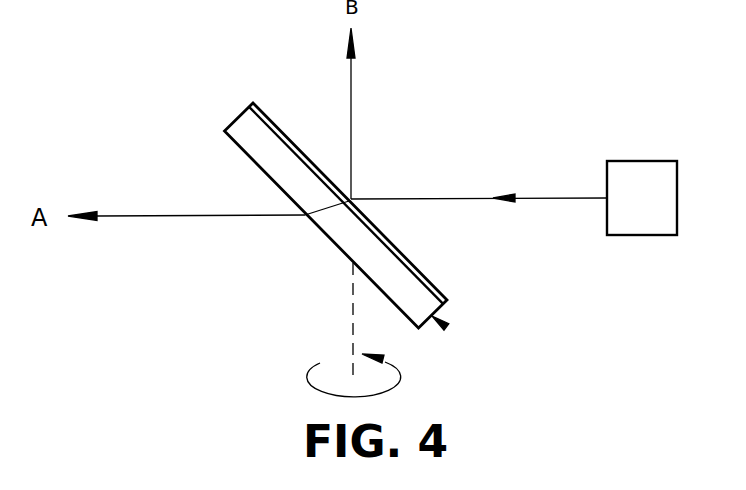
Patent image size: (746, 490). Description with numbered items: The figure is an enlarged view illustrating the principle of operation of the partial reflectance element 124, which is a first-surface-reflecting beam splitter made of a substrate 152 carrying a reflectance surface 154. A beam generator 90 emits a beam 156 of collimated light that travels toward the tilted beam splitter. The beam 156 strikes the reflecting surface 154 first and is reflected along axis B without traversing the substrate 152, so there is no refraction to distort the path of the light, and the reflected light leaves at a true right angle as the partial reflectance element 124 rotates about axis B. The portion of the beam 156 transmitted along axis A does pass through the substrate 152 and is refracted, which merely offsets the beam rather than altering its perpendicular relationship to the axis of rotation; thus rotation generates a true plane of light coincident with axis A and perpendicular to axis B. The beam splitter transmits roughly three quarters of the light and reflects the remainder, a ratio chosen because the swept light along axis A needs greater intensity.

The beam generator 90 is at (640, 161).
The substrate 152 is at (239, 117).
The reflectance surface 154 is at (427, 277).
The beam 156 is at (425, 198).
The partial reflectance element 124 is at (446, 327).